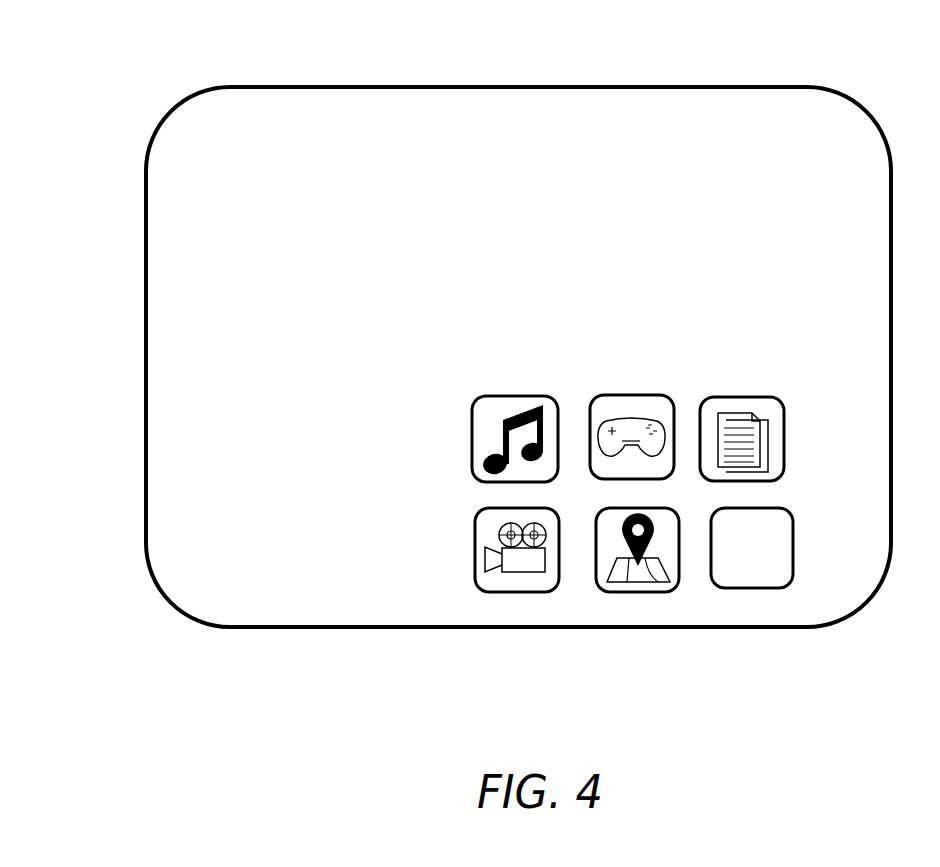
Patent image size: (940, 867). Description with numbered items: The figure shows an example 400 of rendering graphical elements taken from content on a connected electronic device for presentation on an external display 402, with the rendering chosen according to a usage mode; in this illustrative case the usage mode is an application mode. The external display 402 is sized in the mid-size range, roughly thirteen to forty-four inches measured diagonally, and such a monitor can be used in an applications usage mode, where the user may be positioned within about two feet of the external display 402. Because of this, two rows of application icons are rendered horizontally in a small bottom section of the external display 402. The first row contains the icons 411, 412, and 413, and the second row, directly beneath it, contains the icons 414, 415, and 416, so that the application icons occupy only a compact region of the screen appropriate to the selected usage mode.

The example 400 is at (143, 46).
The external display 402 is at (365, 84).
The icon 411 is at (482, 406).
The icon 412 is at (608, 400).
The icon 413 is at (730, 406).
The icon 414 is at (475, 541).
The icon 415 is at (677, 577).
The icon 416 is at (768, 533).